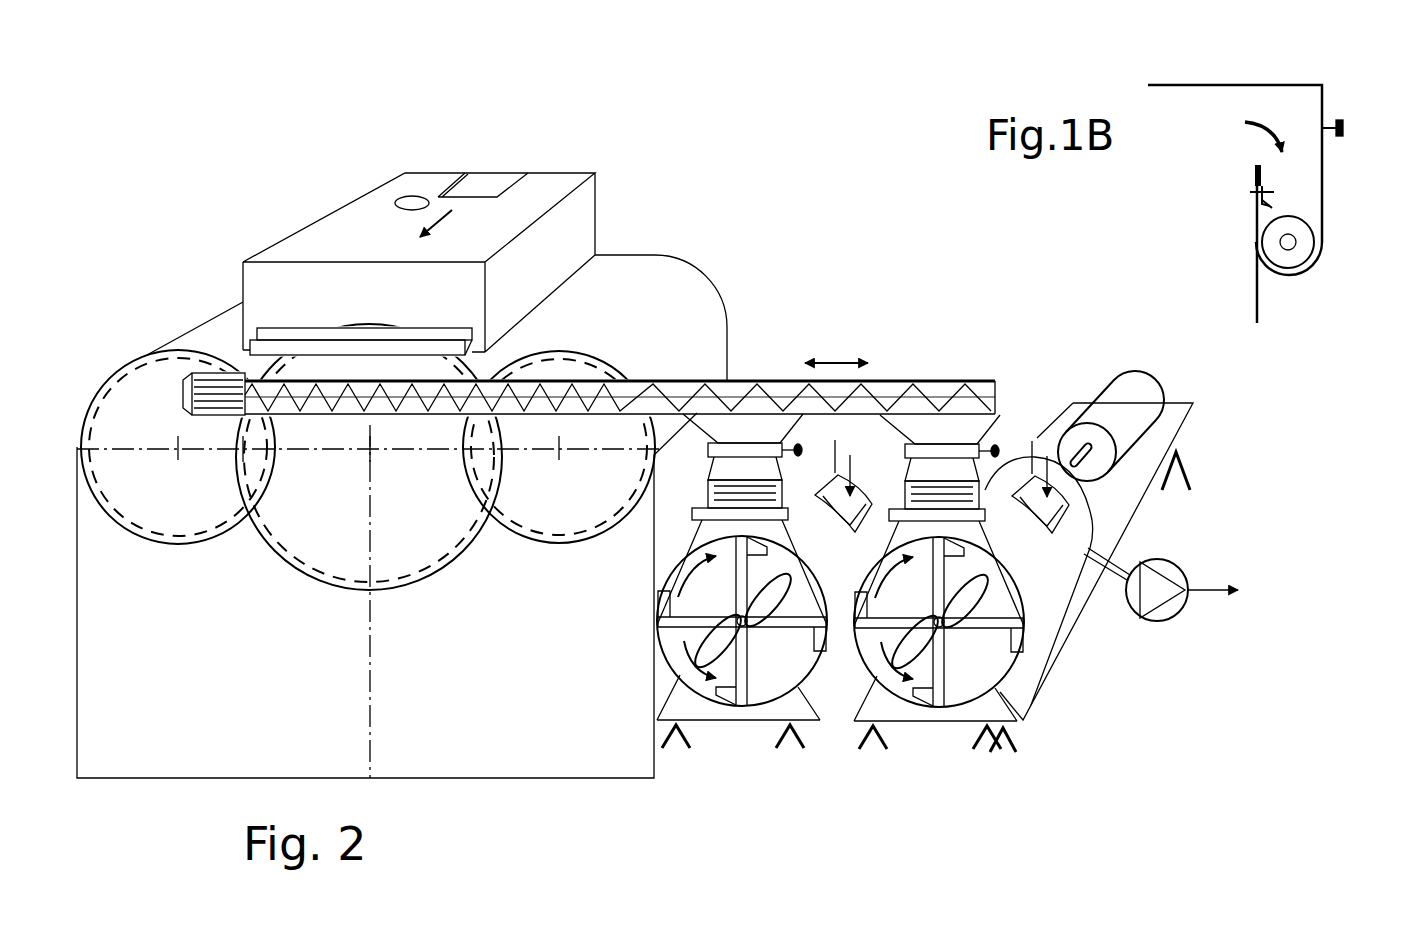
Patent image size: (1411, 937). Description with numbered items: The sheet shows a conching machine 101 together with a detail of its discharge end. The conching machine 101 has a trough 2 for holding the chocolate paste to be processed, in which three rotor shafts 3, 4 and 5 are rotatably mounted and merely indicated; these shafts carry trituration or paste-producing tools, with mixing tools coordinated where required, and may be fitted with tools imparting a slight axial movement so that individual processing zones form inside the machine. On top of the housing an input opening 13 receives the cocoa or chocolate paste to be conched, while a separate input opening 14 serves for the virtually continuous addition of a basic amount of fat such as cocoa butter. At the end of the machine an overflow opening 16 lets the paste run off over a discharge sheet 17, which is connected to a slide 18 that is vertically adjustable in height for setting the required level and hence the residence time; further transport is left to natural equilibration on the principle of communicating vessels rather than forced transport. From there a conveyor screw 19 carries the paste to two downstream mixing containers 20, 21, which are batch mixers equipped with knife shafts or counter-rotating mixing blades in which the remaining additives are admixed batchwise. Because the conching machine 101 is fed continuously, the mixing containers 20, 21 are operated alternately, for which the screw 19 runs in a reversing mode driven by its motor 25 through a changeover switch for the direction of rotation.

In FIG. 2, the conching machine 101 is at (225, 230).
In FIG. 2, the trough 2 is at (326, 592).
In FIG. 2, the rotor shaft 3 is at (177, 453).
In FIG. 2, the rotor shaft 4 is at (365, 453).
In FIG. 2, the rotor shaft 5 is at (557, 453).
In FIG. 2, the input opening 13 is at (482, 180).
In FIG. 2, the input opening for fat 14 is at (409, 192).
In FIG. 1B, the overflow opening 16 is at (1250, 105).
In FIG. 2, the overflow opening 16 is at (270, 328).
In FIG. 1B, the discharge sheet 17 is at (1275, 208).
In FIG. 1B, the slide 18 is at (1258, 173).
In FIG. 1B, the conveyor screw 19 is at (1302, 248).
In FIG. 2, the conveyor screw 19 is at (302, 416).
In FIG. 2, the mixing container 20 is at (833, 613).
In FIG. 2, the mixing container 21 is at (1046, 586).
In FIG. 2, the motor 25 is at (203, 388).